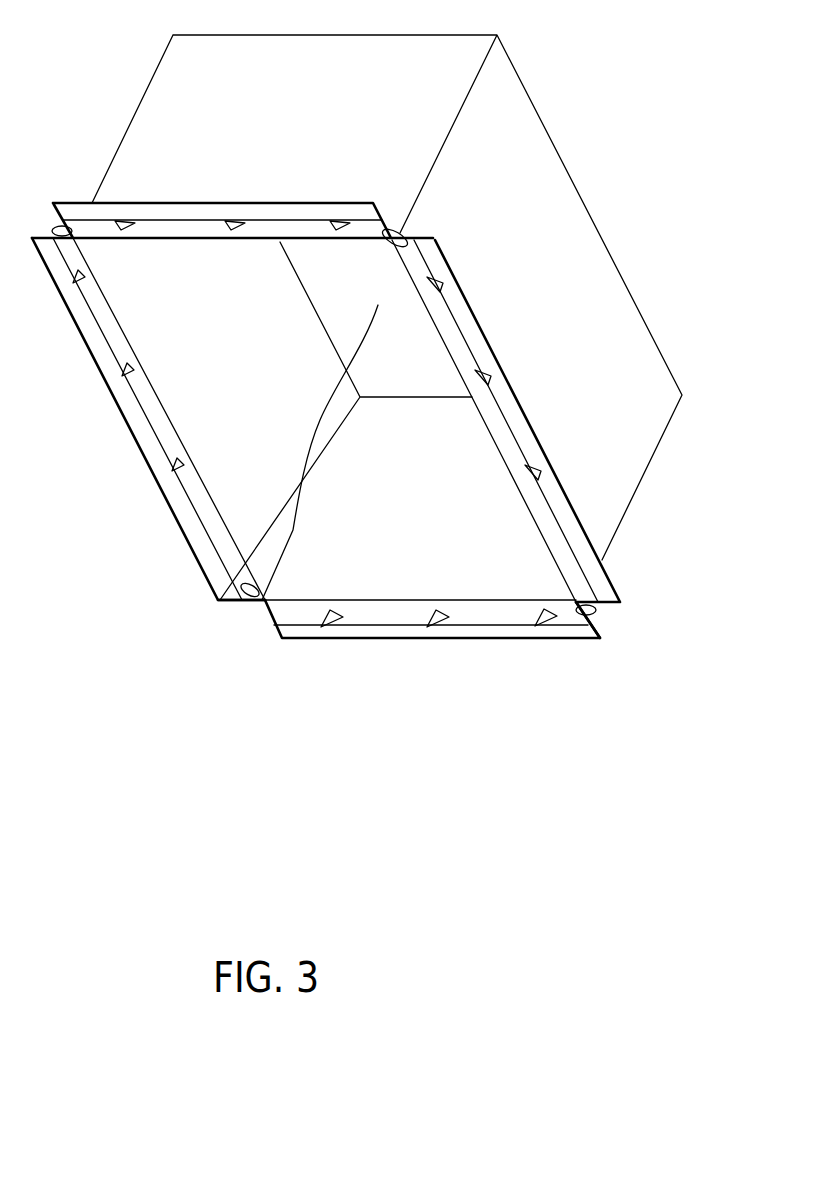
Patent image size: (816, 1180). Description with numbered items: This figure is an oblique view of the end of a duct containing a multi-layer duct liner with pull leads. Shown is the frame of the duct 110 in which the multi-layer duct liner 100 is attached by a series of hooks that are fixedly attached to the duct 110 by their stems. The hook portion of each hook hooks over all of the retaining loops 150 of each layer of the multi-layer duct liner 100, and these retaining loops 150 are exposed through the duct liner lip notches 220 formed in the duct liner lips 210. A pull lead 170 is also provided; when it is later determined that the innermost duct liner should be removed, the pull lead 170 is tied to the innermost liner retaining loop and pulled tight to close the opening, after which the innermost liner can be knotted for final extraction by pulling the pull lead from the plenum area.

The multi-layer duct liner 100 is at (270, 700).
The duct 110 is at (602, 562).
The retaining loops 150 is at (598, 608).
The pull lead 170 is at (218, 600).
The duct liner lips 210 is at (395, 625).
The duct liner lip notches 220 is at (340, 625).